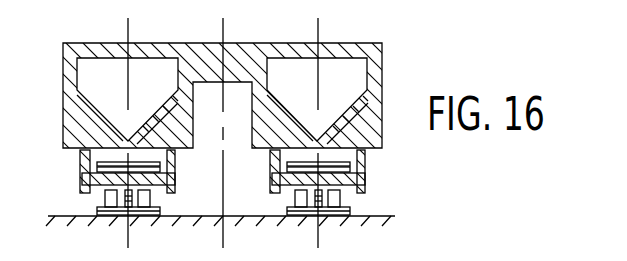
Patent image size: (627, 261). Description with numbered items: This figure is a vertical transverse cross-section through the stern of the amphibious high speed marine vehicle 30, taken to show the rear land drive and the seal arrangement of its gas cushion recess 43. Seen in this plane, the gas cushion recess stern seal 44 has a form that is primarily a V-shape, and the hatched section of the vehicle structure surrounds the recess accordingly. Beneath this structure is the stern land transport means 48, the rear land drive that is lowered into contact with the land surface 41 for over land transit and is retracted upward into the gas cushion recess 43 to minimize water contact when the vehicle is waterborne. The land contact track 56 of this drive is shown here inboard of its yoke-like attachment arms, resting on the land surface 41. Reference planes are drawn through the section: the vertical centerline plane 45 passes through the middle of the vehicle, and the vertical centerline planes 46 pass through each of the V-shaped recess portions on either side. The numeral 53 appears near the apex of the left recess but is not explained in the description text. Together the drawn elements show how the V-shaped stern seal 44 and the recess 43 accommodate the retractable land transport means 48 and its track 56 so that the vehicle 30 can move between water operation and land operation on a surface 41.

The amphibious high speed marine vehicle 30 is at (63, 67).
The land surface 41 is at (65, 215).
The gas cushion recess 43 is at (78, 142).
The gas cushion recess stern seal 44 is at (162, 115).
The vertical centerline plane 45 is at (223, 33).
The vertical centerline planes 46 is at (128, 33).
The stern land transport means 48 is at (163, 210).
The wedge plate 53 is at (130, 142).
The land contact track 56 is at (176, 161).